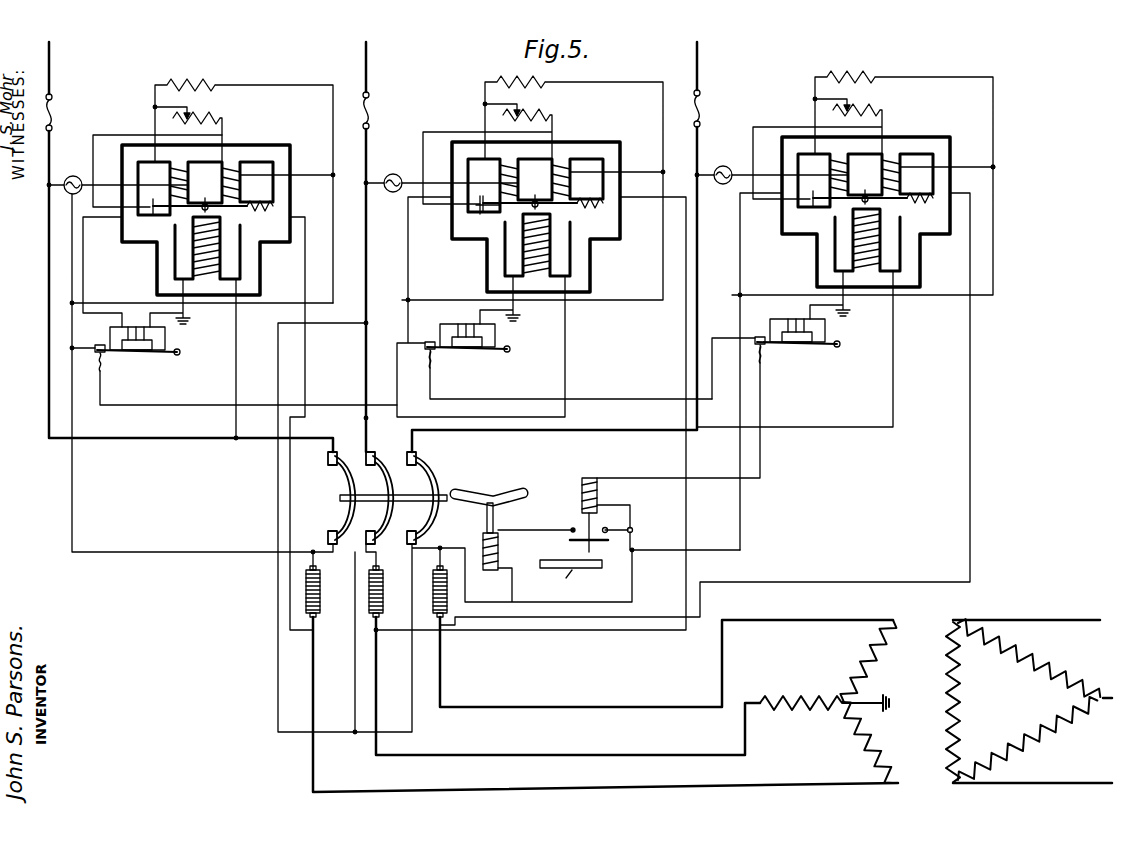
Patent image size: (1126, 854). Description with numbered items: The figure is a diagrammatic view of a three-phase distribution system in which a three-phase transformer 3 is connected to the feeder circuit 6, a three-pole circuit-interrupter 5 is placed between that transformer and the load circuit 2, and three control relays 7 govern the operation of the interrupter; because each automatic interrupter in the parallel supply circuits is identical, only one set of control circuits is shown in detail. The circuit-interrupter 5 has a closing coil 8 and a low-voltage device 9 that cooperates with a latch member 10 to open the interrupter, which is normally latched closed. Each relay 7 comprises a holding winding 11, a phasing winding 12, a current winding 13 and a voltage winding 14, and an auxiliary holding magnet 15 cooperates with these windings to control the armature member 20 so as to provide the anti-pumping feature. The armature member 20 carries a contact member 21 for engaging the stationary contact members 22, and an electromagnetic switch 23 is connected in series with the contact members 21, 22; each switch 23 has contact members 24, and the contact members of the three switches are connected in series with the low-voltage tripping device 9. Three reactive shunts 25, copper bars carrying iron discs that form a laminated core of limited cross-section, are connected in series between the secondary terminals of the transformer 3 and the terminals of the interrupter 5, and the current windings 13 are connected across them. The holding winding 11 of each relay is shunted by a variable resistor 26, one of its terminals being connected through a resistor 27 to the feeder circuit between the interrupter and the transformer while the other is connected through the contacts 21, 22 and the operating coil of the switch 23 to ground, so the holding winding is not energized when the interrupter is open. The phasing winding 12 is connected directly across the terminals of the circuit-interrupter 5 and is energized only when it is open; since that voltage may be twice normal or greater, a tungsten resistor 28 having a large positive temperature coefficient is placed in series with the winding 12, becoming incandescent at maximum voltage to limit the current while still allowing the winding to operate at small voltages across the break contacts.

The load circuit 2 is at (714, 42).
The three-phase transformer 3 is at (930, 612).
The three-pole circuit-interrupter 5 is at (470, 471).
The feeder circuit 6 is at (1075, 620).
The control relay 7 is at (925, 139).
The closing coil 8 is at (483, 545).
The low-voltage device 9 is at (582, 482).
The latch member 10 is at (600, 566).
The holding winding 11 is at (165, 168).
The phasing winding 12 is at (140, 182).
The current winding 13 is at (150, 210).
The voltage winding 14 is at (190, 245).
The auxiliary holding magnet 15 is at (275, 205).
The armature member 20 is at (225, 212).
The contact member 21 is at (200, 210).
The stationary contact members 22 is at (472, 212).
The electromagnetic switch 23 is at (770, 326).
The contact members 24 is at (764, 343).
The reactive shunt 25 is at (433, 595).
The variable resistor 26 is at (215, 115).
The resistor 27 is at (200, 80).
The resistor 28 is at (720, 184).